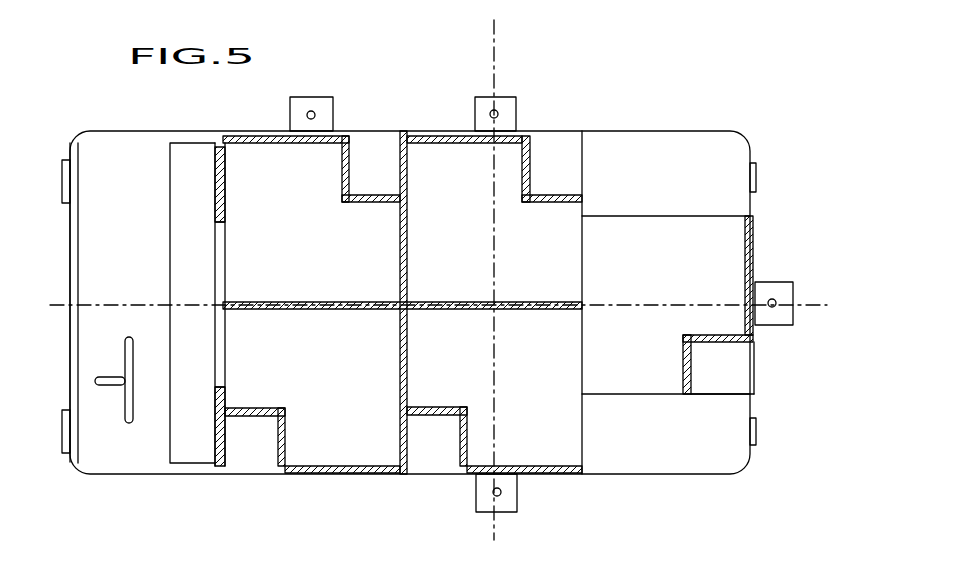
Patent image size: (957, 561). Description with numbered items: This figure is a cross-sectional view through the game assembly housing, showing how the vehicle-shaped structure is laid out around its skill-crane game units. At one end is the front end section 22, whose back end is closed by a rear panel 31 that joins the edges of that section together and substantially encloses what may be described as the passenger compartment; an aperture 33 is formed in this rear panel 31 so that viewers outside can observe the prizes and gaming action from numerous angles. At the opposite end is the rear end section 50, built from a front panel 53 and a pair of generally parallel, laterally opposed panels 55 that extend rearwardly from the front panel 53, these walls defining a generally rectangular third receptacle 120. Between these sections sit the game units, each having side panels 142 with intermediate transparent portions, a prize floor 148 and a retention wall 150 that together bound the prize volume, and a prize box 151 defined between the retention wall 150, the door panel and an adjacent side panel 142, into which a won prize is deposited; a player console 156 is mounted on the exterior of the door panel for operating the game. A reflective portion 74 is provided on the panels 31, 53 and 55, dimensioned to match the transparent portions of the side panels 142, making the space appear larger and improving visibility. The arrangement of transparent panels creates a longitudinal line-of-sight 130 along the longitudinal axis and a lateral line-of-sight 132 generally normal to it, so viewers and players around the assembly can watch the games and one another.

The front end section 22 is at (58, 288).
The rear panel 31 is at (223, 170).
The aperture 33 is at (215, 238).
The rear end section 50 is at (757, 462).
The front panel 53 is at (582, 157).
The laterally opposed panels 55 is at (672, 215).
The reflective portion 74 is at (223, 197).
The third receptacle 120 is at (767, 377).
The longitudinal line-of-sight 130 is at (808, 300).
The lateral line-of-sight 132 is at (494, 33).
The side panel 142 is at (407, 235).
The prize floor 148 is at (333, 261).
The retention wall 150 is at (530, 147).
The prize box 151 is at (360, 153).
The player console 156 is at (333, 102).